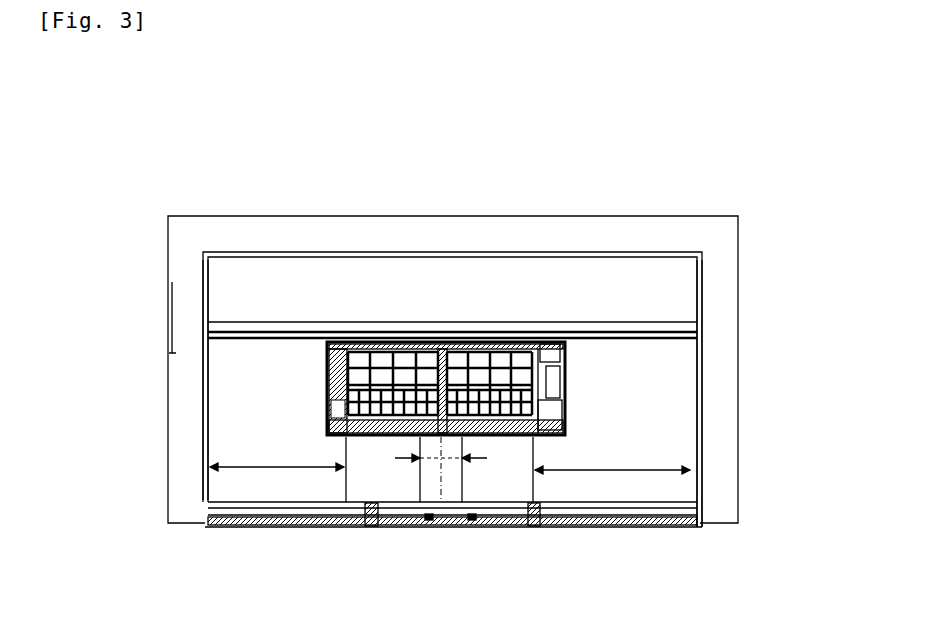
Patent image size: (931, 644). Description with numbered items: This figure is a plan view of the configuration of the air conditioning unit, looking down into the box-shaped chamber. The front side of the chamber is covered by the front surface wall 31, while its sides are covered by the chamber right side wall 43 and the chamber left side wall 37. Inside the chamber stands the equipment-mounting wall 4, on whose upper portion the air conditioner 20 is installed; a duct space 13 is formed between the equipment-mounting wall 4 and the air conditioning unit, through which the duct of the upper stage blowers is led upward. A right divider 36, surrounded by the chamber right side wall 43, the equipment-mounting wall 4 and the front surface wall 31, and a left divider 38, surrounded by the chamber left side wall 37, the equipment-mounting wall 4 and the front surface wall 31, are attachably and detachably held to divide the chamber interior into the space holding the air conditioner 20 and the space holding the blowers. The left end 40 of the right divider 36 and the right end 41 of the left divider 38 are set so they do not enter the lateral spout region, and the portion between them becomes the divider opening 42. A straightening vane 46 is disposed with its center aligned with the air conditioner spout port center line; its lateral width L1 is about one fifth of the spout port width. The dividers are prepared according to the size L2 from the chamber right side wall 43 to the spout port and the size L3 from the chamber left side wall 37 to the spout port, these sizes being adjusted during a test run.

The equipment-mounting wall 4 is at (600, 322).
The duct space 13 is at (372, 293).
The air conditioner 20 is at (328, 367).
The front surface wall 31 is at (680, 530).
The right divider 36 is at (658, 408).
The chamber left side wall 37 is at (205, 280).
The left divider 38 is at (235, 418).
The left end of the right divider 40 is at (533, 480).
The right end of the left divider 41 is at (347, 477).
The divider opening 42 is at (398, 483).
The chamber right side wall 43 is at (700, 308).
The straightening vane 46 is at (430, 487).
The lateral width of the straightening vane L1 is at (447, 460).
The size from the chamber right side wall to the air conditioner spout port L2 is at (613, 459).
The size from the chamber left side wall to the air conditioner spout port L3 is at (279, 457).